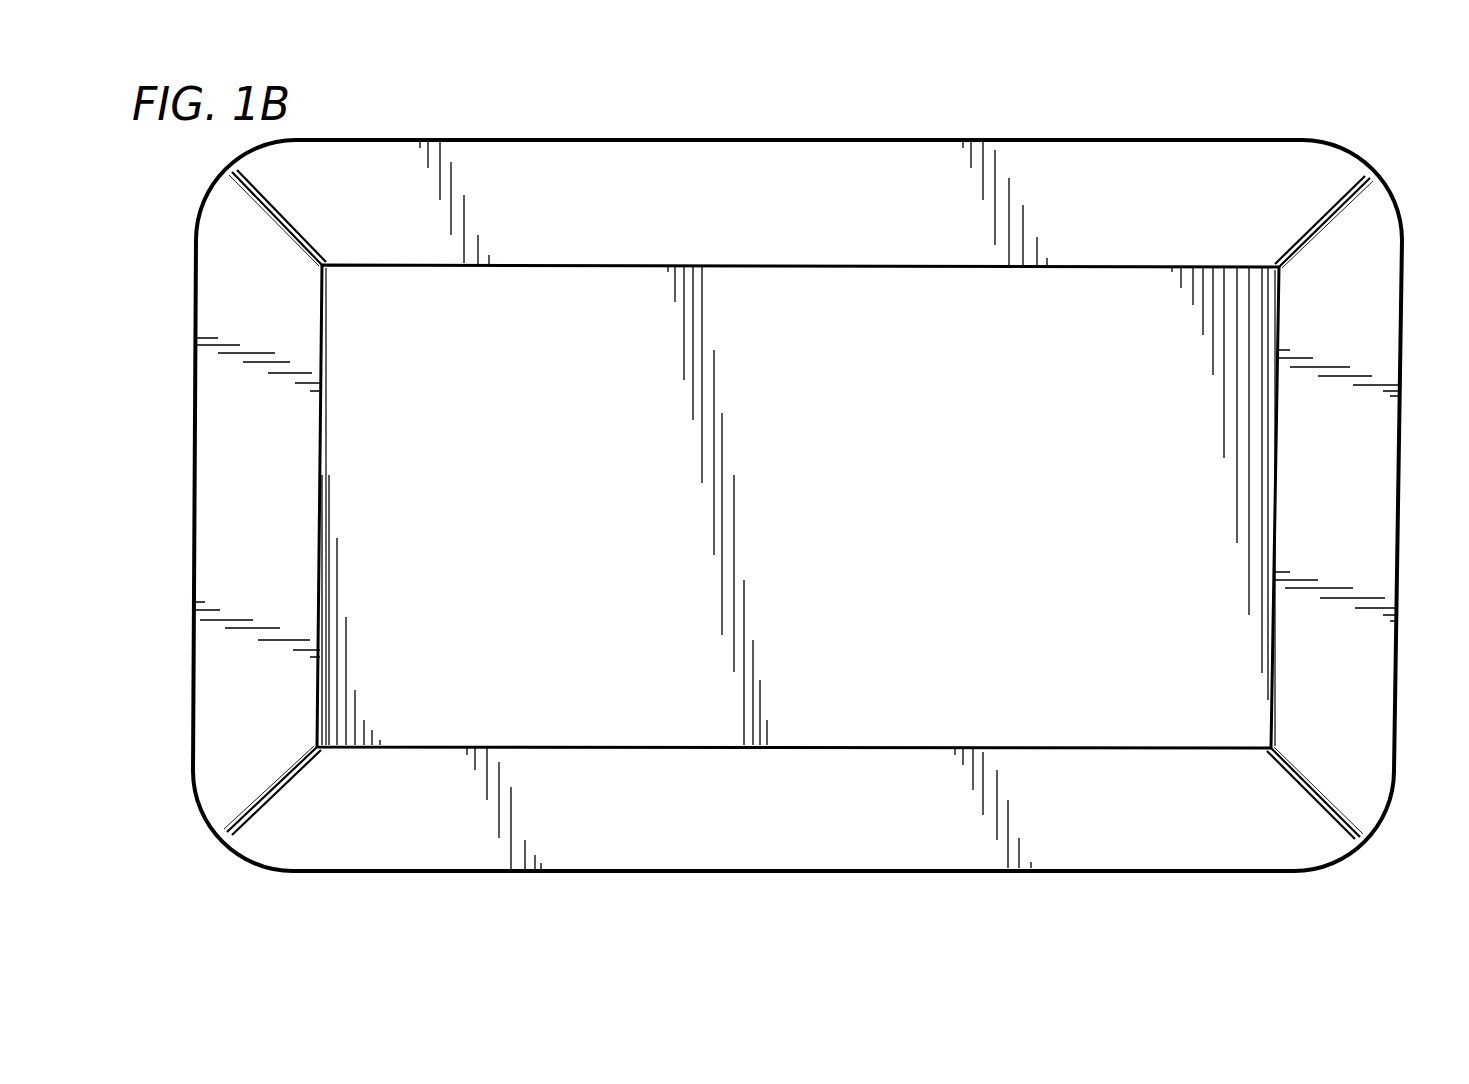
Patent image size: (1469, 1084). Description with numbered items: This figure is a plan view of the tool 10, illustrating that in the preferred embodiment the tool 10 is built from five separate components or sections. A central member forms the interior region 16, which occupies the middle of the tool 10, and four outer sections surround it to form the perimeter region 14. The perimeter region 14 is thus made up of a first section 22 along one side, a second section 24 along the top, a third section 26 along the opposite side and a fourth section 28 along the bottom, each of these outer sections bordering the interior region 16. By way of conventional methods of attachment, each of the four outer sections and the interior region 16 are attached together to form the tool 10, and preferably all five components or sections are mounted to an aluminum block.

The tool 10 is at (226, 858).
The perimeter region 14 is at (731, 218).
The interior region 16 is at (778, 498).
The first section 22 is at (252, 472).
The second section 24 is at (881, 178).
The third section 26 is at (1368, 347).
The fourth section 28 is at (757, 815).